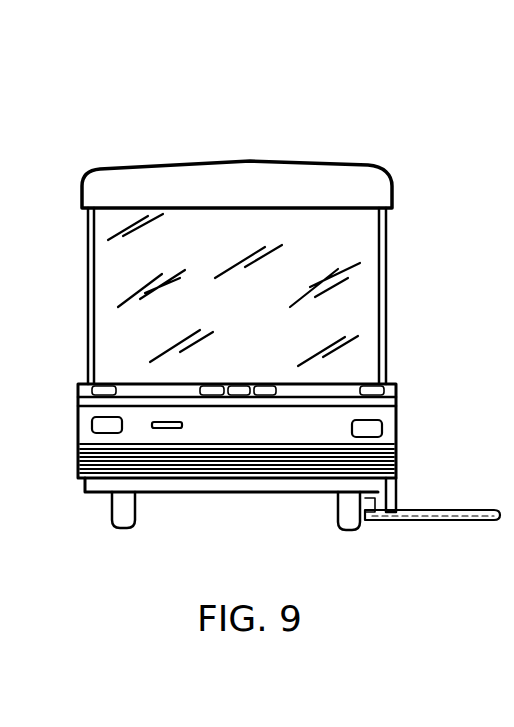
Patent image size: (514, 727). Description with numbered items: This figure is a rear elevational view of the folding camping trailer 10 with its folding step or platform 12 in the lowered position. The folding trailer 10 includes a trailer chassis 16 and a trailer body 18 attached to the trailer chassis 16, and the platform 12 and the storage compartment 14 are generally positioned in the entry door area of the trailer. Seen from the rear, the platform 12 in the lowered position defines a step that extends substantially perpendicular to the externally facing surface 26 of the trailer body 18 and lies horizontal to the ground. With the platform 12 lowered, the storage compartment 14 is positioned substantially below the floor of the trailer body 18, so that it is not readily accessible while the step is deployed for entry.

The folding camping trailer 10 is at (318, 155).
The folding step or platform 12 is at (462, 521).
The storage compartment 14 is at (366, 522).
The trailer chassis 16 is at (232, 493).
The trailer body 18 is at (384, 436).
The externally facing surface 26 is at (396, 466).